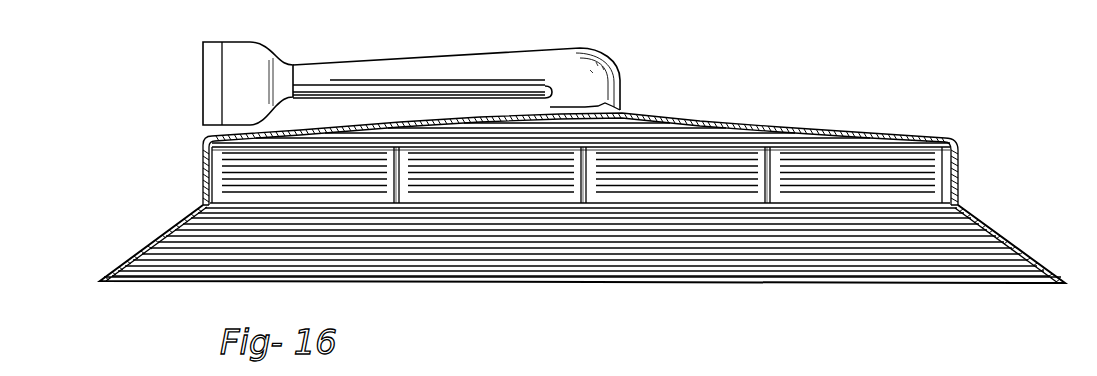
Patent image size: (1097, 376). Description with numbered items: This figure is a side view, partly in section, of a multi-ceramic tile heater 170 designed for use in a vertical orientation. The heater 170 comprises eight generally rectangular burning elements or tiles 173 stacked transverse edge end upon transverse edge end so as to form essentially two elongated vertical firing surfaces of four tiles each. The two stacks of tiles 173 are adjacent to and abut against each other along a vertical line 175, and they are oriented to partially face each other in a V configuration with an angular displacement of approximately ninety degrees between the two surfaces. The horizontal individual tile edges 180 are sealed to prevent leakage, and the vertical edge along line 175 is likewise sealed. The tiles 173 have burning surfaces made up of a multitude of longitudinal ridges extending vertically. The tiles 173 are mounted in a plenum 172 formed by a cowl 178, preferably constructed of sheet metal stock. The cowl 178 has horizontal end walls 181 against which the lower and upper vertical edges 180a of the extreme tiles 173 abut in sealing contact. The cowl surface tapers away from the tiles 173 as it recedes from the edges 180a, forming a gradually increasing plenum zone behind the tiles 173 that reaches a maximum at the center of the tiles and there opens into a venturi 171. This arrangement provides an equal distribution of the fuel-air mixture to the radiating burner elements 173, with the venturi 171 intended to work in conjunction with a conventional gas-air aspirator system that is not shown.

The heater 170 is at (590, 290).
The venturi 171 is at (389, 37).
The plenum 172 is at (581, 133).
The tiles 173 is at (355, 178).
The vertical line 175 is at (728, 142).
The cowl 178 is at (672, 117).
The horizontal individual tile edges 180 is at (394, 183).
The lower and upper vertical edges 180a is at (214, 182).
The horizontal end walls 181 is at (203, 168).